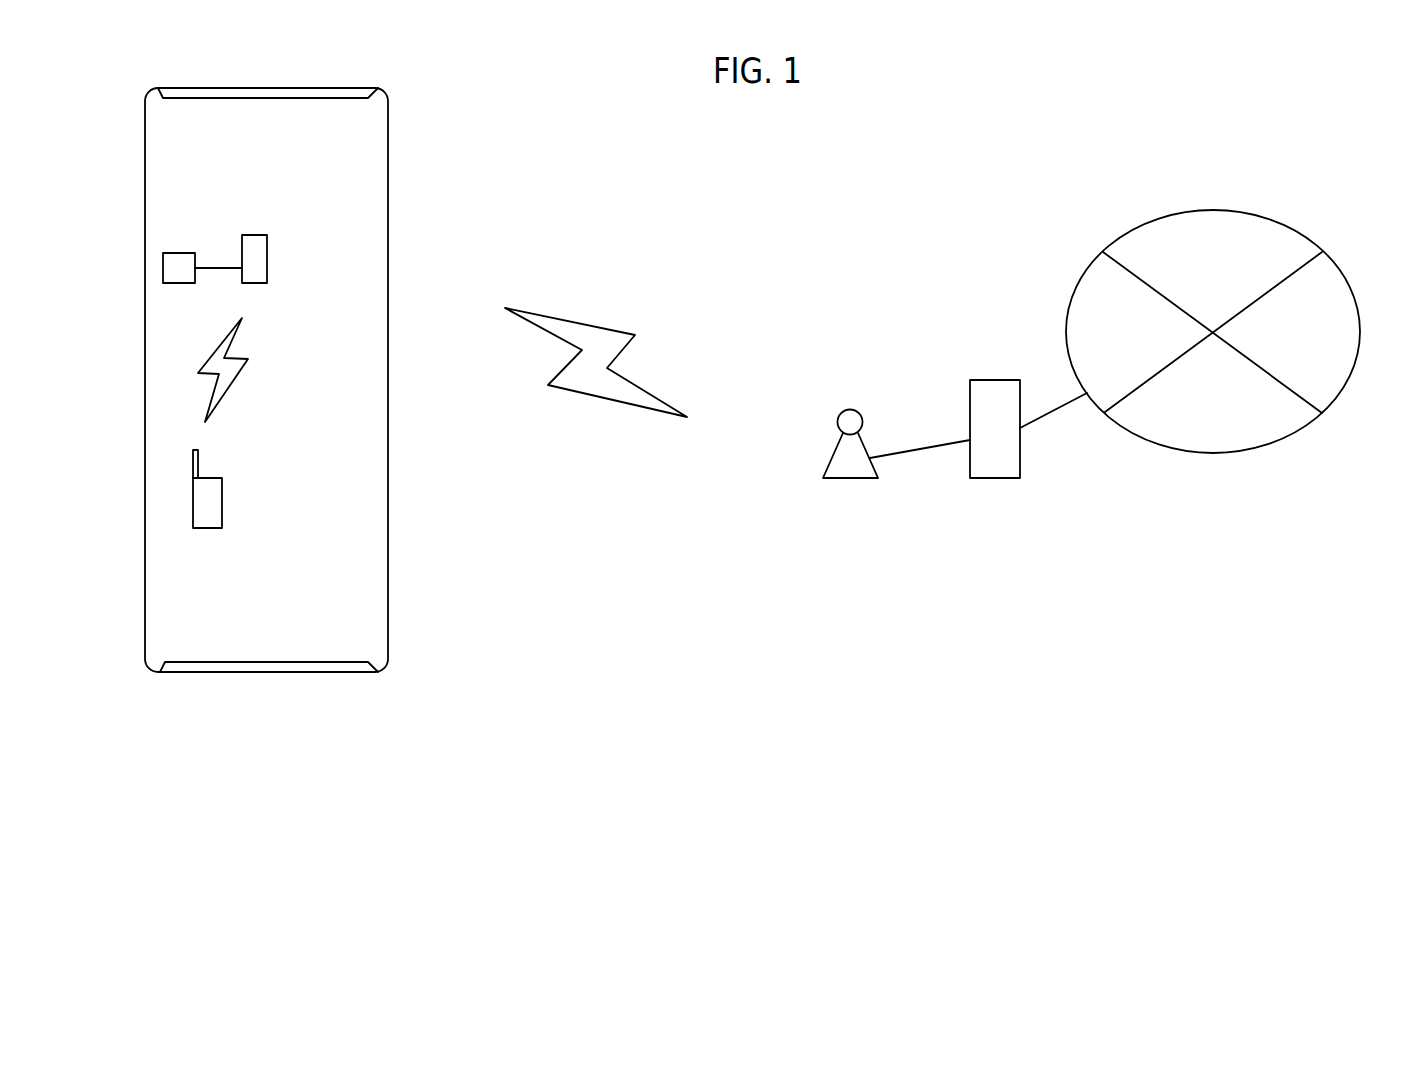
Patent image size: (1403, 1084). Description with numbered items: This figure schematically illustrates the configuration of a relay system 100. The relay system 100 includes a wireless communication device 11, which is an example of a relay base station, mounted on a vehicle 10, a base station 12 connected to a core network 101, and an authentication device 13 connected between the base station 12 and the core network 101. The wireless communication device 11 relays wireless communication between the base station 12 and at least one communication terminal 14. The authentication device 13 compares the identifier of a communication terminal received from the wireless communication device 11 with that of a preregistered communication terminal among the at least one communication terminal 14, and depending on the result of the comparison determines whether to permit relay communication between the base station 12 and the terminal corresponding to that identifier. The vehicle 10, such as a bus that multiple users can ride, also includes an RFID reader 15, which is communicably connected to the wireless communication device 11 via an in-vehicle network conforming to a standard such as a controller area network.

The vehicle 10 is at (388, 622).
The wireless communication device 11 is at (268, 250).
The base station 12 is at (857, 478).
The authentication device 13 is at (1000, 478).
The communication terminal 14 is at (222, 508).
The RFID reader 15 is at (178, 253).
The relay system 100 is at (1126, 809).
The core network 101 is at (1292, 435).